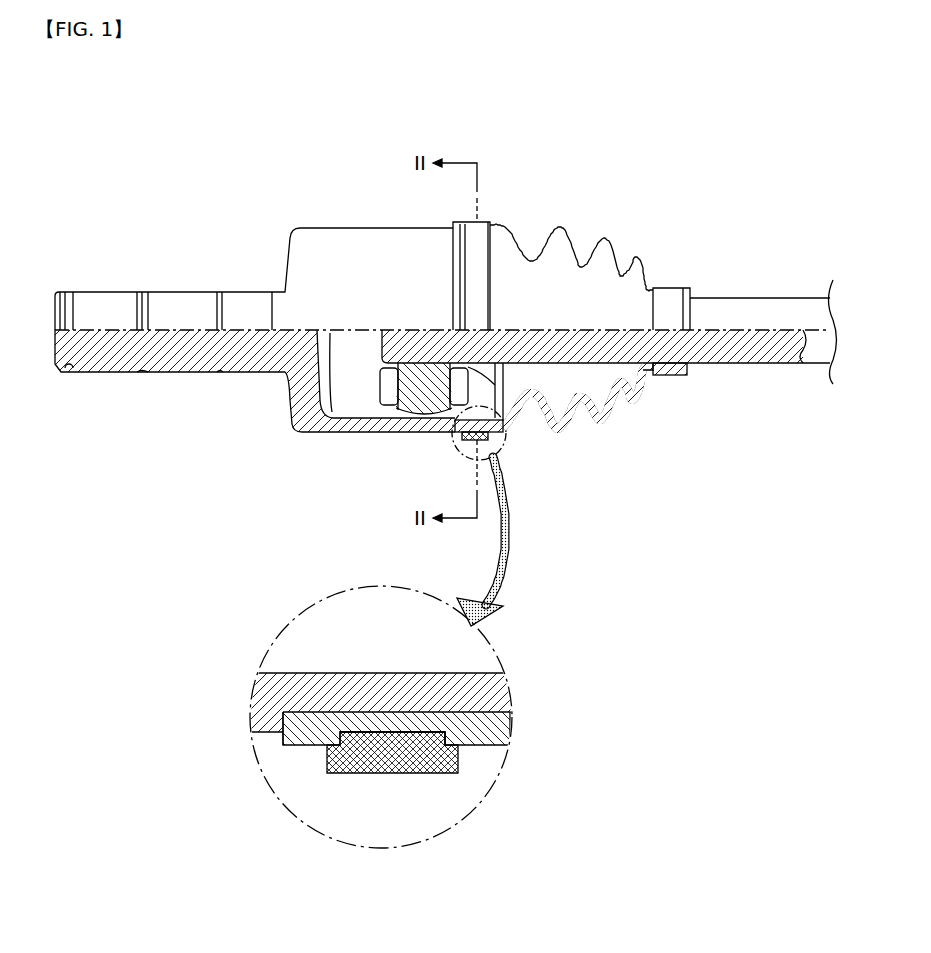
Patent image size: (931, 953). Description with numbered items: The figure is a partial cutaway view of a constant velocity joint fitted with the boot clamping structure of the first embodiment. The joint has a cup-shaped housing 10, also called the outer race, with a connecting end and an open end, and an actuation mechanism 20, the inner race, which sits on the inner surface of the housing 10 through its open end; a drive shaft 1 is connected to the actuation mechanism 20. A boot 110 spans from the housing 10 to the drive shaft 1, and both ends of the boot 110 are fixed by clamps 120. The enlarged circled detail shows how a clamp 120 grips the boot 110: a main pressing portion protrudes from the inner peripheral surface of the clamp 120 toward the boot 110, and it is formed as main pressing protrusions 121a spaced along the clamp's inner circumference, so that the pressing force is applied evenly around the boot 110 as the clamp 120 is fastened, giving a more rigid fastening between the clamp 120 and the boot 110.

The drive shaft 1 is at (750, 364).
The housing 10 is at (278, 412).
The actuation mechanism 20 is at (368, 400).
The boot 110 is at (577, 432).
The clamp 120 is at (482, 222).
The main pressing protrusion 121a is at (490, 727).